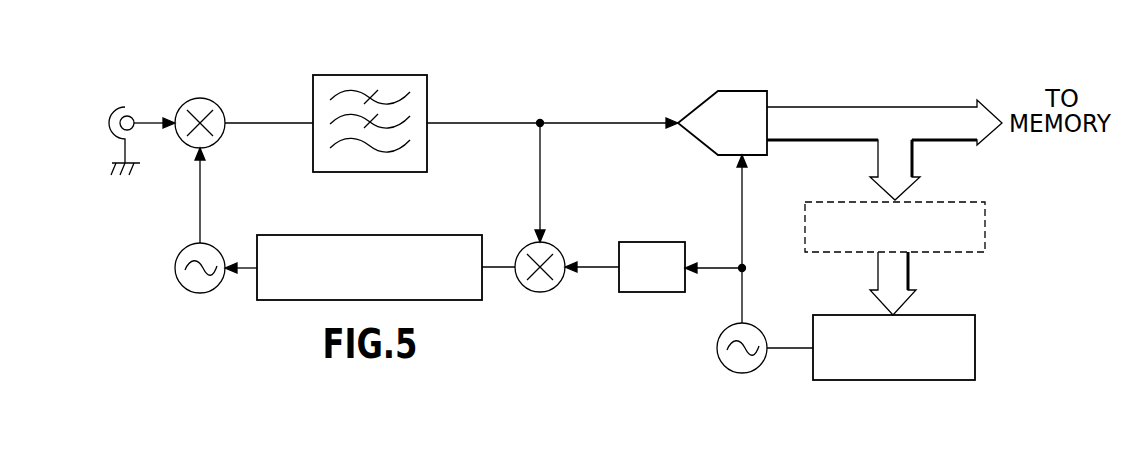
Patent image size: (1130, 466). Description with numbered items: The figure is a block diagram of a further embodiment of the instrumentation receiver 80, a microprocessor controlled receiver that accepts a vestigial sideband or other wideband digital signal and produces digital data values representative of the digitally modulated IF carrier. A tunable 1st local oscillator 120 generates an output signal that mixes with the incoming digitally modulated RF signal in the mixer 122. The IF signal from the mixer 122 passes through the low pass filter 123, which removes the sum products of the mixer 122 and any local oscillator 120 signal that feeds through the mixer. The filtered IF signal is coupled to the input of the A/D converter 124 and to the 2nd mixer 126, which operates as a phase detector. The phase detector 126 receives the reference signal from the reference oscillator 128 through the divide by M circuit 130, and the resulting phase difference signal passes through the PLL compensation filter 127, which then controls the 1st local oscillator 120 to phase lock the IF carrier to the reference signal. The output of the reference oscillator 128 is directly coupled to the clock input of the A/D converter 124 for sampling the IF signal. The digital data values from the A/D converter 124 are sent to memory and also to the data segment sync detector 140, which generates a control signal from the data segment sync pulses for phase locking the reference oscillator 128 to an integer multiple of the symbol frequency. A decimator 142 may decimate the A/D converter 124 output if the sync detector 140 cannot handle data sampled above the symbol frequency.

The instrumentation receiver 80 is at (638, 74).
The 1st local oscillator 120 is at (175, 268).
The mixer 122 is at (200, 98).
The low pass filter 123 is at (397, 75).
The A/D converter 124 is at (750, 91).
The 2nd mixer 126 is at (540, 293).
The PLL compensation filter 127 is at (452, 235).
The reference oscillator 128 is at (758, 326).
The divide by M circuit 130 is at (662, 242).
The data segment sync detector 140 is at (960, 315).
The decimator 142 is at (985, 228).